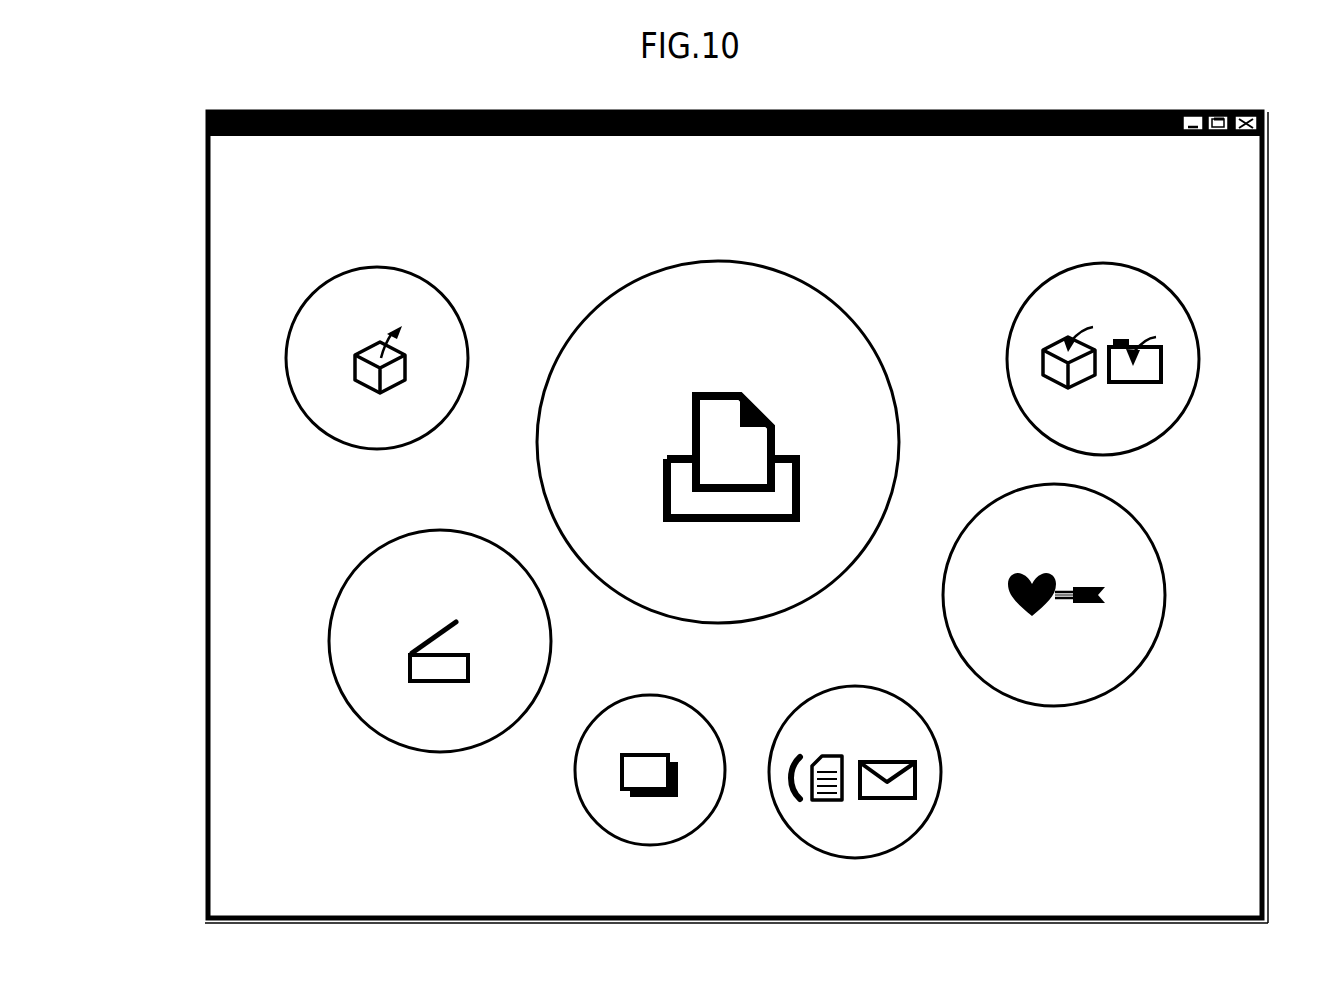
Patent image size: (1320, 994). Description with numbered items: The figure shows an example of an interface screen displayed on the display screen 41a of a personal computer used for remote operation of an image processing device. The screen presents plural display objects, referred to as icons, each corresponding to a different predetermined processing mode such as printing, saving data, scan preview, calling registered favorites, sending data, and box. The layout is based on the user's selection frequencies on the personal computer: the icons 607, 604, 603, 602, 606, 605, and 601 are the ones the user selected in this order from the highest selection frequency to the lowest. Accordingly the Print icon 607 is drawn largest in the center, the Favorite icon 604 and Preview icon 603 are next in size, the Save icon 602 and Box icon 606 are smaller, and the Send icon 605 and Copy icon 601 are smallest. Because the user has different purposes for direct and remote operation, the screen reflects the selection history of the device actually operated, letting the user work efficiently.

The display screen 41a is at (1128, 113).
The icon 601 is at (576, 788).
The icon 602 is at (1178, 296).
The icon 603 is at (328, 645).
The icon 604 is at (1165, 598).
The icon 605 is at (925, 822).
The icon 606 is at (287, 365).
The icon 607 is at (835, 298).